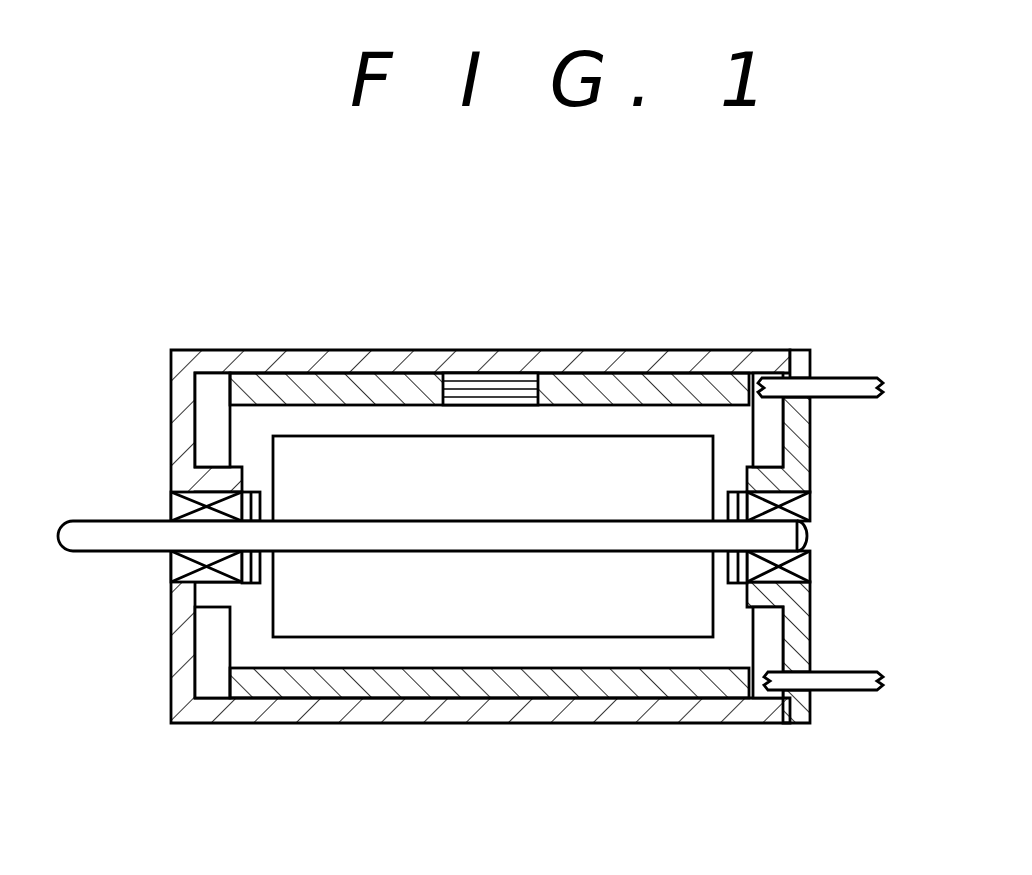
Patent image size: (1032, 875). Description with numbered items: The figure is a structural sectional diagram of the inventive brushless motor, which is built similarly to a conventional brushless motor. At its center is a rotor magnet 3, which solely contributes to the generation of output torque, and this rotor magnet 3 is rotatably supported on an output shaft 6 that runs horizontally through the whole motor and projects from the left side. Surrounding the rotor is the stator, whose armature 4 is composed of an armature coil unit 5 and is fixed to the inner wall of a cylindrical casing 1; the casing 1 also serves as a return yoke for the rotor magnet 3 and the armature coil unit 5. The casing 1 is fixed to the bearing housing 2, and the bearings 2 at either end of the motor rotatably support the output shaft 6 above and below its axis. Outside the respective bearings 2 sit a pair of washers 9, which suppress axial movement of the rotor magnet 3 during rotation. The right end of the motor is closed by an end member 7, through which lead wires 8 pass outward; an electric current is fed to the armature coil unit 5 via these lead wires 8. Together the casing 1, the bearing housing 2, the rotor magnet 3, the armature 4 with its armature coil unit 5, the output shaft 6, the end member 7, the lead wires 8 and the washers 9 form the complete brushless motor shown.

The casing 1 is at (507, 363).
The bearing housing 2 is at (182, 565).
The rotor magnet 3 is at (513, 622).
The armature 4 is at (590, 372).
The armature coil unit 5 is at (297, 385).
The output shaft 6 is at (100, 535).
The end bracket 7 is at (803, 452).
The lead wires 8 is at (842, 385).
The washers 9 is at (253, 583).